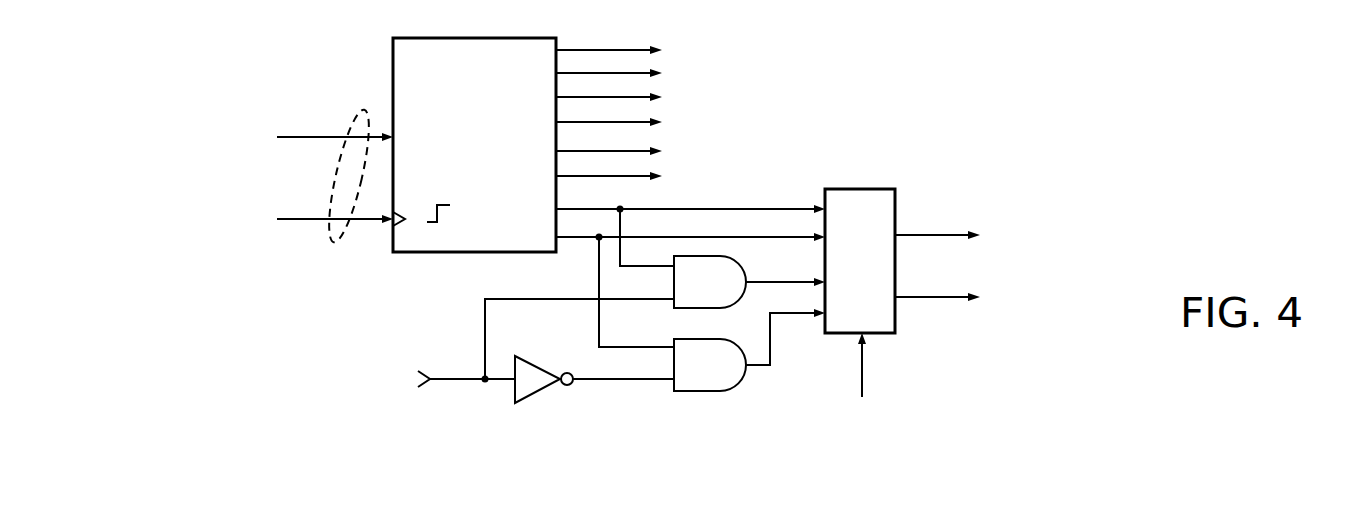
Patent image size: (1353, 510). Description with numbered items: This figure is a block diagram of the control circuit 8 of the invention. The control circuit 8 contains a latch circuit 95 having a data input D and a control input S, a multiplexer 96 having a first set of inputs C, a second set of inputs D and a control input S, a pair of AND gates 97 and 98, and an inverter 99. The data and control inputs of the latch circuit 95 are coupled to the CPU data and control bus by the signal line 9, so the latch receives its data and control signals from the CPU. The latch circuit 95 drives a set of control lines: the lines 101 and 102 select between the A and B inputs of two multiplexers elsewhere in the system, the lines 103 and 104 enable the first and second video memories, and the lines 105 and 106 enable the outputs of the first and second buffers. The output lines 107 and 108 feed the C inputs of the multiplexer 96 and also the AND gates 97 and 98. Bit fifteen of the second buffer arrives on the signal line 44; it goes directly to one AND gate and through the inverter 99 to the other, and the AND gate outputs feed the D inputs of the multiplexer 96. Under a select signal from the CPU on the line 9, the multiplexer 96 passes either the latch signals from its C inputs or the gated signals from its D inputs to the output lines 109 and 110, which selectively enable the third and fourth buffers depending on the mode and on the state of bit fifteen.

The control circuit 8 is at (878, 115).
The signal line 9 is at (363, 108).
The signal line 44 is at (450, 381).
The latch circuit 95 is at (420, 38).
The multiplexer 96 is at (887, 189).
The AND gate 97 is at (737, 263).
The AND gate 98 is at (717, 338).
The inverter 99 is at (535, 395).
The line 101 is at (585, 50).
The line 102 is at (585, 73).
The line 103 is at (585, 97).
The line 104 is at (585, 122).
The line 105 is at (585, 151).
The line 106 is at (585, 176).
The output line 107 is at (585, 209).
The output line 108 is at (587, 239).
The output line 109 is at (935, 235).
The output line 110 is at (928, 297).